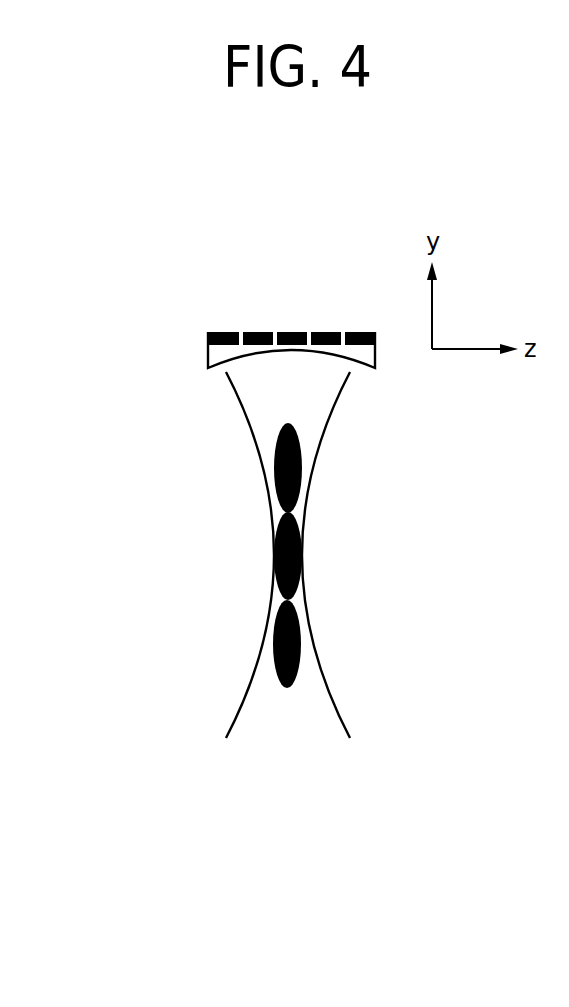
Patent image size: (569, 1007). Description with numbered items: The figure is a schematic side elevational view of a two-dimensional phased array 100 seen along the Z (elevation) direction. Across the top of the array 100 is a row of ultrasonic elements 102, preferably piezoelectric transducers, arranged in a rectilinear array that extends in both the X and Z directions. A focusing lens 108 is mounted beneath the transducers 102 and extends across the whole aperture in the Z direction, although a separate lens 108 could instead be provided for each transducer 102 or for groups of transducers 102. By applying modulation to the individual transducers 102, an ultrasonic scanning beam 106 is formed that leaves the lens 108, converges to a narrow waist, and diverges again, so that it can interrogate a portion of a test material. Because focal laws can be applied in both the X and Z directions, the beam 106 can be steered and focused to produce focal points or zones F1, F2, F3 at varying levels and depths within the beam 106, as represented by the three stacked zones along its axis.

The two-dimensional phased array 100 is at (272, 249).
The ultrasonic elements 102 is at (322, 333).
The focusing lens 108 is at (208, 350).
The ultrasonic scanning beam 106 is at (241, 407).
The focal zone F1 is at (302, 452).
The focal zone F2 is at (302, 517).
The focal zone F3 is at (300, 657).